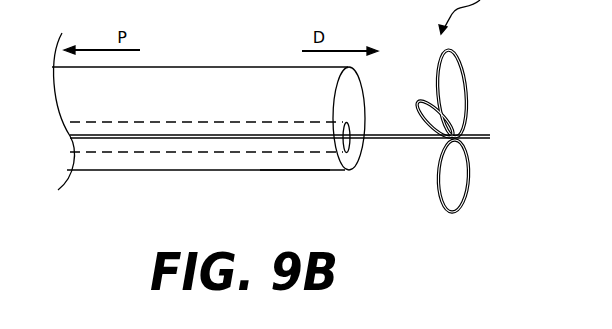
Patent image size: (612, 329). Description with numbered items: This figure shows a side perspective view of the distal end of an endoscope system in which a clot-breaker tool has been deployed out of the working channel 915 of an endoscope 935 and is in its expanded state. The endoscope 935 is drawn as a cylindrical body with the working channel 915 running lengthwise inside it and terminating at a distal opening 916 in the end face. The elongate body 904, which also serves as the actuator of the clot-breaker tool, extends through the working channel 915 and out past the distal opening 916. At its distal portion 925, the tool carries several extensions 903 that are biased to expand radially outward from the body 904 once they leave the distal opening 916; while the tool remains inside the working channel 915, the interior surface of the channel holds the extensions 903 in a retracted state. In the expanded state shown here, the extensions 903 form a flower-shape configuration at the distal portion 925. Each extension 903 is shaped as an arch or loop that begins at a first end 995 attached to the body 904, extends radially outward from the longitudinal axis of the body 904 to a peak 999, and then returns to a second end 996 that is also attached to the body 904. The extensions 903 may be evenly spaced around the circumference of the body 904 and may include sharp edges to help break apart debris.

The extensions 903 is at (428, 101).
The elongate body 904 is at (112, 135).
The working channel 915 is at (175, 152).
The distal opening 916 is at (350, 150).
The distal portion 925 is at (432, 201).
The endoscope 935 is at (295, 170).
The first end 995 is at (472, 148).
The second end 996 is at (432, 152).
The peak 999 is at (453, 224).